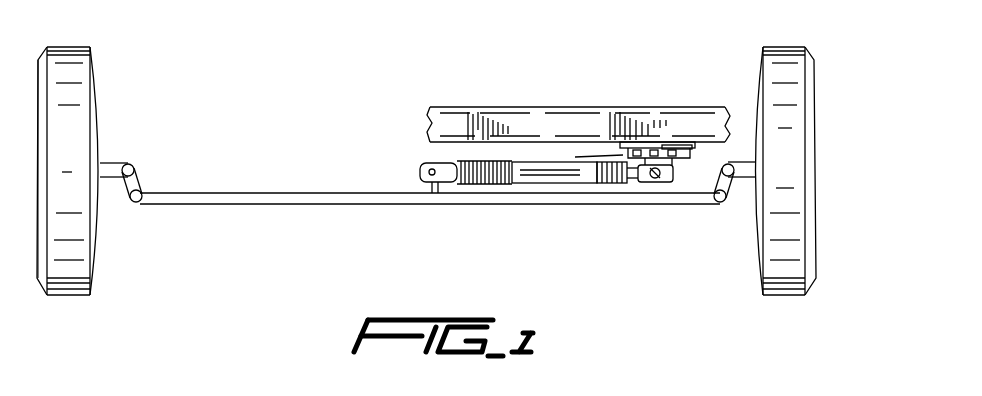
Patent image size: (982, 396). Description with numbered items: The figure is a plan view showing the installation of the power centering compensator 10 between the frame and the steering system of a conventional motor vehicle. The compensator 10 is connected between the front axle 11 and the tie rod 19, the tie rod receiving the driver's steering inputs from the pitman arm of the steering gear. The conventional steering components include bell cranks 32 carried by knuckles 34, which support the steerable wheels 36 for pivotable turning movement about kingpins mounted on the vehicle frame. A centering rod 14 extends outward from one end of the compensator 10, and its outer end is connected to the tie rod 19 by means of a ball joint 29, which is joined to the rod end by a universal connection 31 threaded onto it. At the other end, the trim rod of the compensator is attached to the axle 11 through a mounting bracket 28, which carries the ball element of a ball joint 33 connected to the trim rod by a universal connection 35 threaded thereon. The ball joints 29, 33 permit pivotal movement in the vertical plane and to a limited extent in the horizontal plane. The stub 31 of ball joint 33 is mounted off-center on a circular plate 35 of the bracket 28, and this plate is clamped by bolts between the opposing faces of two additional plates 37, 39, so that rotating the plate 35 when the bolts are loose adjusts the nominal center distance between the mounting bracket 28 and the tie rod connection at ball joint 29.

The power centering compensator 10 is at (517, 172).
The front axle 11 is at (530, 107).
The centering rod 14 is at (450, 163).
The tie rod 19 is at (277, 205).
The mounting bracket 28 is at (678, 169).
The ball joint 29 is at (420, 170).
The universal connection 31 is at (653, 176).
The bell cranks 32 is at (140, 181).
The ball joint 33 is at (662, 180).
The knuckles 34 is at (110, 163).
The universal connection 35 is at (657, 148).
The steerable wheels 36 is at (100, 248).
The plate 37 is at (578, 157).
The plate 39 is at (678, 142).